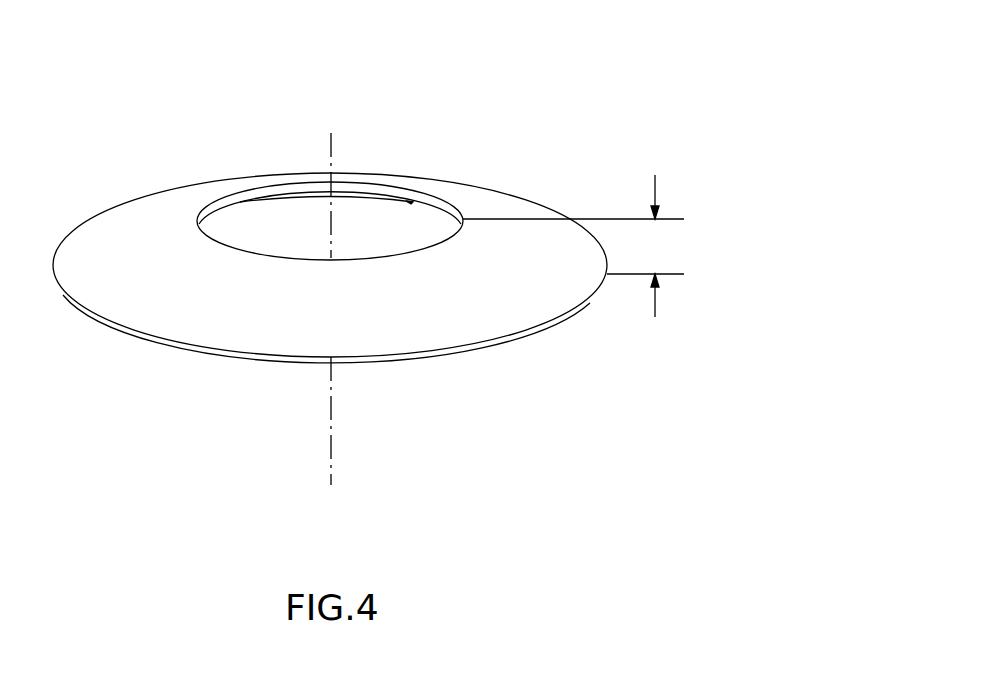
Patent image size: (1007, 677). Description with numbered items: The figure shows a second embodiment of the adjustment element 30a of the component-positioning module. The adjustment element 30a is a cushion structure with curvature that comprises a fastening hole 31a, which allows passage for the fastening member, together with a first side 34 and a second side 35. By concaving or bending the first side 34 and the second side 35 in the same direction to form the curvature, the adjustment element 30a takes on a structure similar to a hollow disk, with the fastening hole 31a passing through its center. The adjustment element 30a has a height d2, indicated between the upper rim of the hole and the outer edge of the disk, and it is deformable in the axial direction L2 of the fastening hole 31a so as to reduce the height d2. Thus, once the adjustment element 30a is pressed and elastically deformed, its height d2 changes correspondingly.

The adjustment element 30a is at (657, 71).
The fastening hole 31a is at (388, 223).
The first side 34 is at (122, 230).
The second side 35 is at (270, 360).
The axial direction L2 is at (333, 294).
The height d2 is at (573, 246).